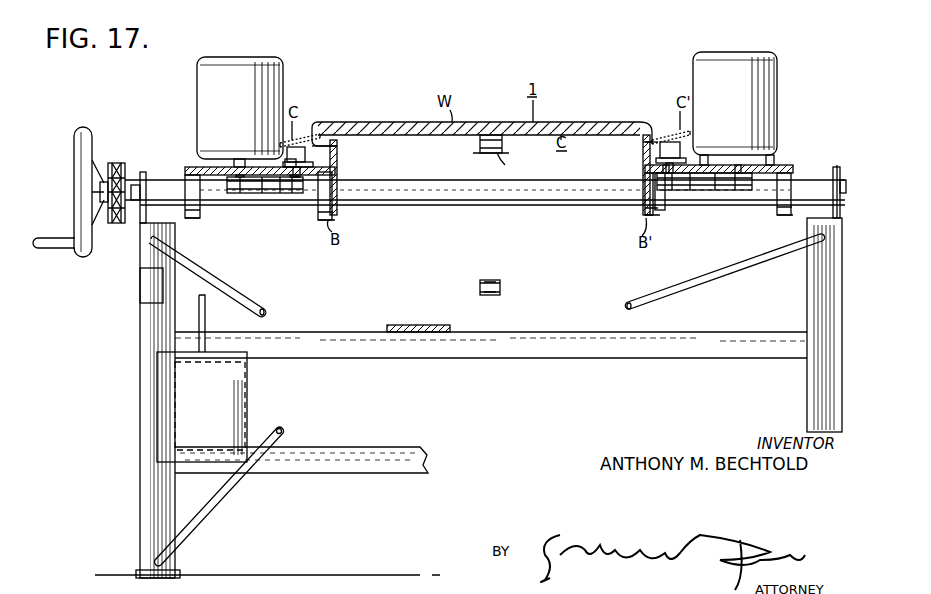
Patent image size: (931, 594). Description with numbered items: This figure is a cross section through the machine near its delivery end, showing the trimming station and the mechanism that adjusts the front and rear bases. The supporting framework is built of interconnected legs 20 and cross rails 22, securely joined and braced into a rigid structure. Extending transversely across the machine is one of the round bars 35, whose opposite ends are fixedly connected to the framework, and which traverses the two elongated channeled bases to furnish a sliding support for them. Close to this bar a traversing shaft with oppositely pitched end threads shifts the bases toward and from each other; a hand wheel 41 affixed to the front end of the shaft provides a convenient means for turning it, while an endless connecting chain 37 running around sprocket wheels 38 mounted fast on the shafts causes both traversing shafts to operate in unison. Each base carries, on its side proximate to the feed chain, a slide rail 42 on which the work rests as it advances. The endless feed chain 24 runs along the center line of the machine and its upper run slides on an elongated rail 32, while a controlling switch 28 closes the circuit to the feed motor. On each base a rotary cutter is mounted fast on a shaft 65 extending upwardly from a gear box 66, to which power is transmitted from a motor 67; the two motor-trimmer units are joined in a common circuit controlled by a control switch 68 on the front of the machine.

The legs 20 is at (148, 400).
The cross rails 22 is at (375, 447).
The endless feed chain 24 is at (480, 142).
The controlling switch 28 is at (244, 407).
The elongated rail 32 is at (512, 164).
The round bars 35 is at (538, 200).
The endless connecting chain 37 is at (117, 163).
The sprocket wheels 38 is at (134, 180).
The hand wheel 41 is at (86, 128).
The slide rail 42 is at (338, 165).
The shaft 65 is at (300, 141).
The gear box 66 is at (306, 153).
The motor 67 is at (282, 48).
The control switch 68 is at (141, 294).